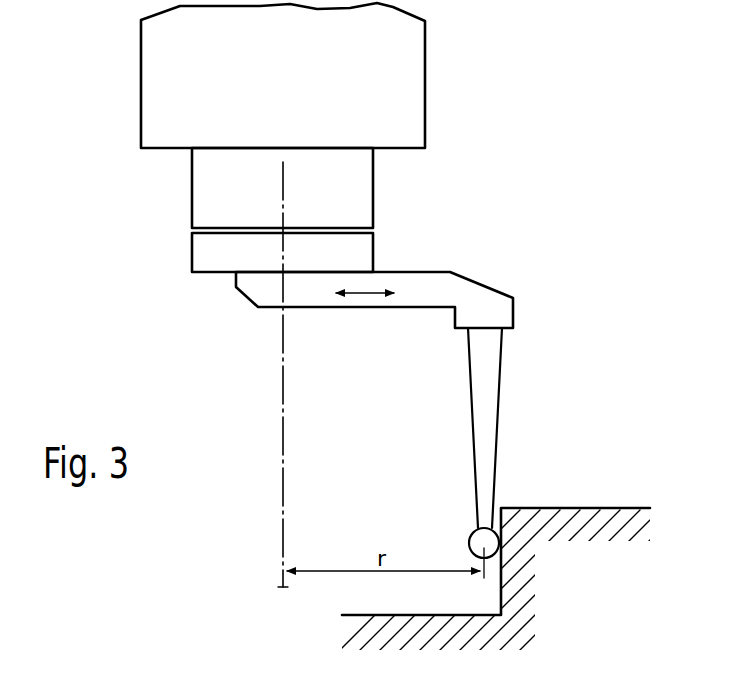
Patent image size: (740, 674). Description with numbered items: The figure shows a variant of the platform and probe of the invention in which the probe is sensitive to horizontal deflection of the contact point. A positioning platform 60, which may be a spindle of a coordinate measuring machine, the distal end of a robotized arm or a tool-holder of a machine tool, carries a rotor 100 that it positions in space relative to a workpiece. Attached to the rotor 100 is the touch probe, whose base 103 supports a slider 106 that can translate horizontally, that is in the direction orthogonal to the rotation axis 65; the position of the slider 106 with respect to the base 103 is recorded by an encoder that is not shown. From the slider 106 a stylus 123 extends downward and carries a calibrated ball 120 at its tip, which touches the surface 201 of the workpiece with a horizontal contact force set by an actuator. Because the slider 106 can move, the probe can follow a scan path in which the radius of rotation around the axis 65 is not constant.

The positioning platform 60 is at (157, 101).
The rotor 100 is at (212, 198).
The touch probe base 103 is at (222, 253).
The slider 106 is at (423, 282).
The rotation axis 65 is at (280, 425).
The stylus 123 is at (485, 397).
The calibrated ball 120 is at (470, 533).
The surface 201 is at (568, 520).